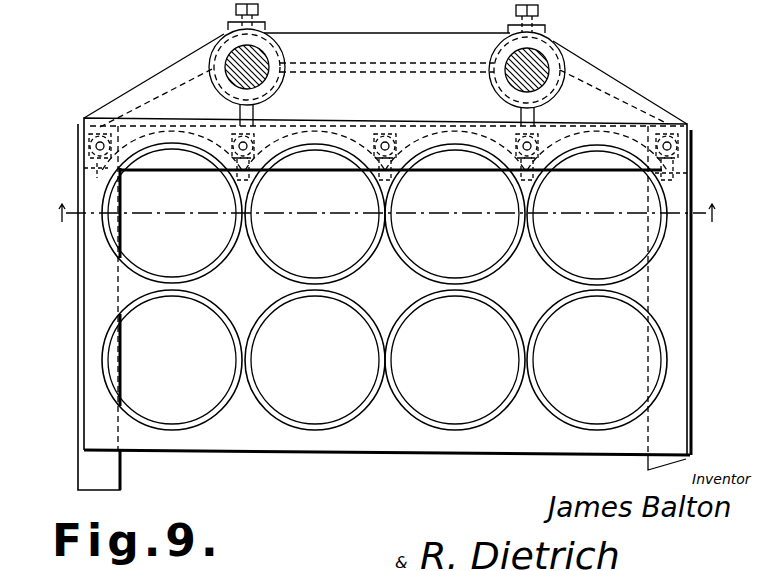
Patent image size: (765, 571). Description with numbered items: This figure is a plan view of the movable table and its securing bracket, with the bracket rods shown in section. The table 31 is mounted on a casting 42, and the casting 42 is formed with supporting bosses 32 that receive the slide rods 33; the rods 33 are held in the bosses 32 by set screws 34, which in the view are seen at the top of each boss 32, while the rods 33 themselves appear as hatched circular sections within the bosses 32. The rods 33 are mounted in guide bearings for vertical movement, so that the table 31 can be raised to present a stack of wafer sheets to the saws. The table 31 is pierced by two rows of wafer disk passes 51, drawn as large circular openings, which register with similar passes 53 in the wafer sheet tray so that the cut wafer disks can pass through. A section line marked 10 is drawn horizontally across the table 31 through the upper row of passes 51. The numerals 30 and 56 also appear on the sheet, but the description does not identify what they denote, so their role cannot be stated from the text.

The section line 10- 10 is at (386, 215).
The engine frame casing 30 is at (384, 245).
The table 31 is at (387, 440).
The supporting boss 32 is at (226, 46).
The slide rod 33 is at (233, 62).
The set screw 34 is at (259, 10).
The casting 42 is at (602, 102).
The wafer disk pass 51 is at (223, 308).
The pass 53 is at (657, 0).
The connection member 56 is at (610, 0).